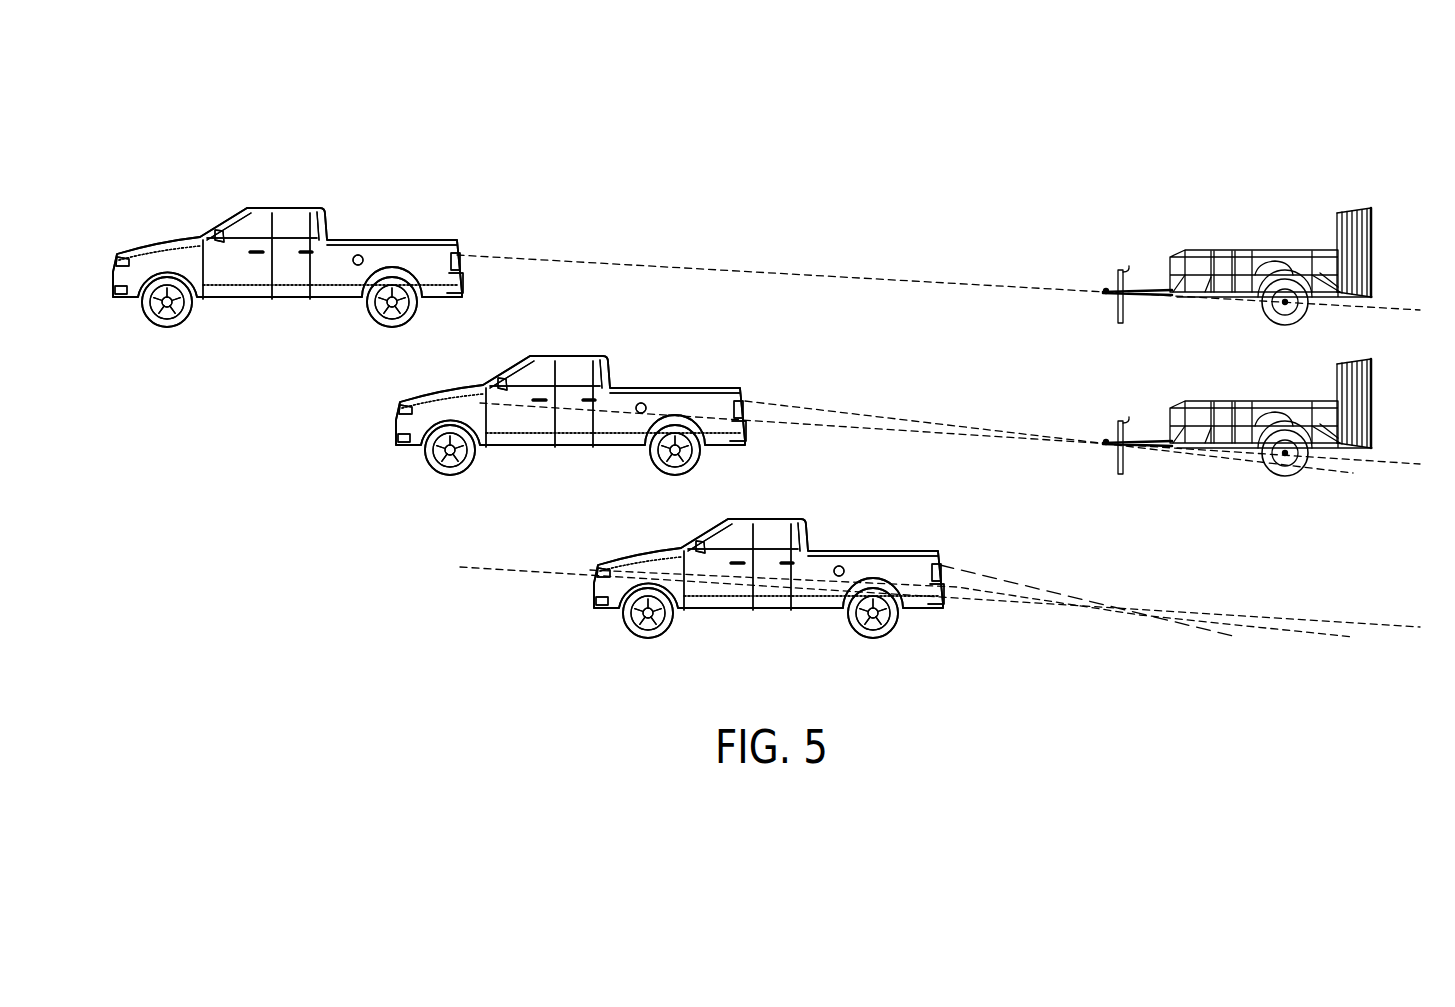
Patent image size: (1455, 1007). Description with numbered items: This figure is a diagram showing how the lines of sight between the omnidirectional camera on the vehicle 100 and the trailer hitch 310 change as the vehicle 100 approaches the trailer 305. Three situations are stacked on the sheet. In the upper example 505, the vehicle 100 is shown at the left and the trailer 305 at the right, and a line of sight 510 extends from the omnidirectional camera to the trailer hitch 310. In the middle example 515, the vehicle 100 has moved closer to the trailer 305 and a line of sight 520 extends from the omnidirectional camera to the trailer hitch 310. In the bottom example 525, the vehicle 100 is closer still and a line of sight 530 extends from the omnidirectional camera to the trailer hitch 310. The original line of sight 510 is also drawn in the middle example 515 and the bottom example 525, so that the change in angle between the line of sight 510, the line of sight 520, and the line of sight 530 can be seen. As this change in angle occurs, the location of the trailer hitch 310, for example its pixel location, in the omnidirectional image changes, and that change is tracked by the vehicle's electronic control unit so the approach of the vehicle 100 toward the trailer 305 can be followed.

The vehicle 100 is at (113, 298).
The trailer 305 is at (1372, 226).
The trailer hitch 310 is at (1122, 269).
The upper example 505 is at (220, 207).
The line of sight 510 is at (585, 260).
The middle example 515 is at (385, 409).
The line of sight 520 is at (928, 421).
The bottom example 525 is at (597, 555).
The line of sight 530 is at (1011, 580).